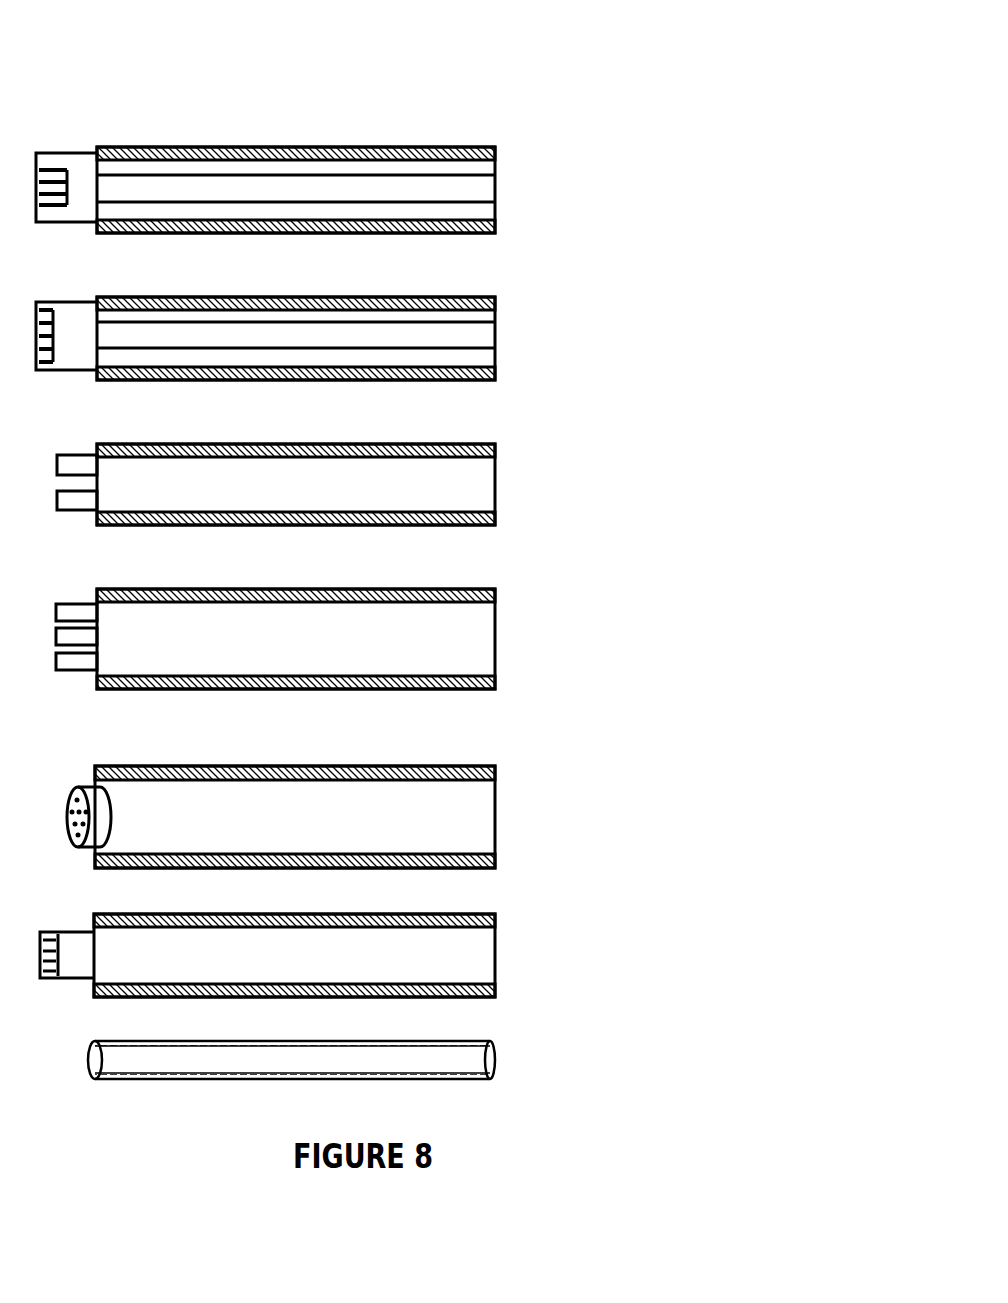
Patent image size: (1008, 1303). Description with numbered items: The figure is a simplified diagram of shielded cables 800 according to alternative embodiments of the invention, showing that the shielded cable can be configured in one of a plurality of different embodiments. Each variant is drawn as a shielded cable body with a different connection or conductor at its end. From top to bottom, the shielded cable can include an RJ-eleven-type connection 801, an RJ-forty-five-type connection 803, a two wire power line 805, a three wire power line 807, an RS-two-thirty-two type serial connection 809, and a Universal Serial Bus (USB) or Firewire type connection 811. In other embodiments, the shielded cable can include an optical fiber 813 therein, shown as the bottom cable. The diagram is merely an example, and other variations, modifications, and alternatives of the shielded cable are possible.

The shielded cables 800 is at (538, 101).
The RJ 11-type connection 801 is at (575, 182).
The RJ 45-type connection 803 is at (575, 322).
The two wire power line 805 is at (603, 455).
The three wire power line 807 is at (603, 608).
The RS-232 type connection 809 is at (648, 790).
The Universal Serial Bus (USB) or Firewire type connection 811 is at (714, 942).
The optical fiber 813 is at (693, 1050).